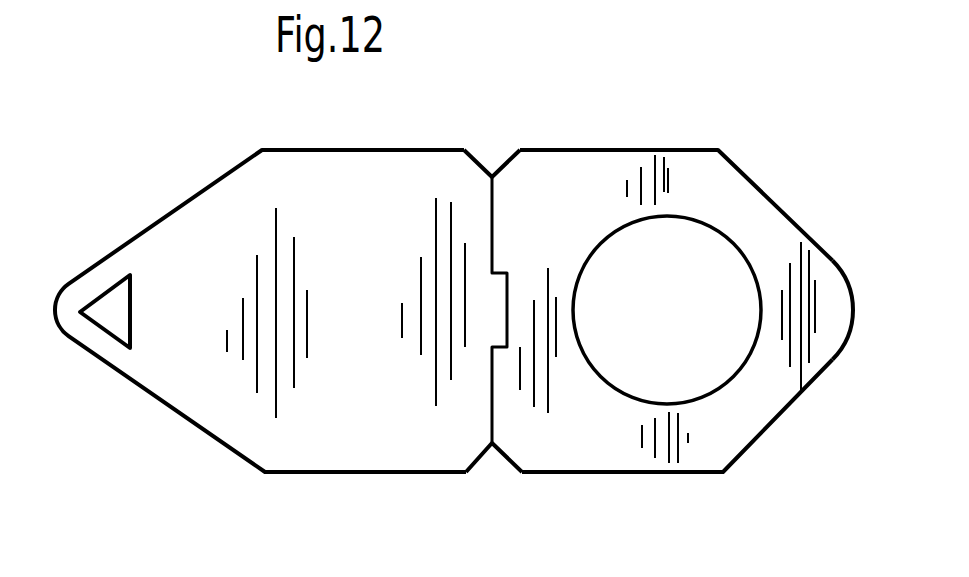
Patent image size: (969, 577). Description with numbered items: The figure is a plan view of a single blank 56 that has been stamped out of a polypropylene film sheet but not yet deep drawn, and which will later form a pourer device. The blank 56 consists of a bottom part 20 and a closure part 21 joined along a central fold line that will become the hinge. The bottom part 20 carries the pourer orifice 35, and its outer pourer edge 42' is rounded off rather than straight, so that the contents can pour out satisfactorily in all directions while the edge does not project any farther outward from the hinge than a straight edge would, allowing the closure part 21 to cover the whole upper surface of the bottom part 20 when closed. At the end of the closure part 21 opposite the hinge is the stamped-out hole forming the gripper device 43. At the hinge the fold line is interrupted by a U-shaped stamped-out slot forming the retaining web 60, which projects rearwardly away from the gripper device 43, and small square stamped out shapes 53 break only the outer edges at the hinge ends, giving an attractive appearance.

The closure part 21 is at (235, 185).
The gripper device 43 is at (103, 288).
The stamped out shapes 53 is at (507, 162).
The retaining web 60 is at (497, 297).
The blank 56 is at (530, 483).
The bottom part 20 is at (700, 165).
The pourer edge 42' is at (853, 280).
The pourer orifice 35 is at (688, 292).